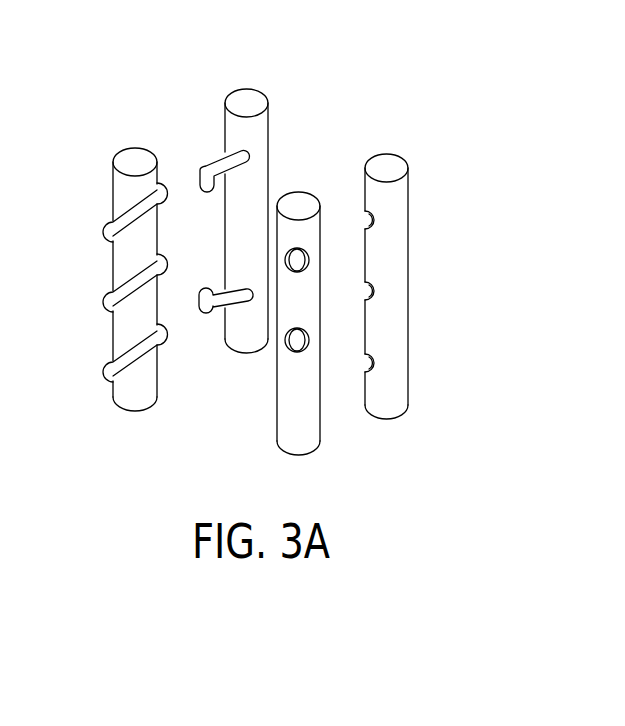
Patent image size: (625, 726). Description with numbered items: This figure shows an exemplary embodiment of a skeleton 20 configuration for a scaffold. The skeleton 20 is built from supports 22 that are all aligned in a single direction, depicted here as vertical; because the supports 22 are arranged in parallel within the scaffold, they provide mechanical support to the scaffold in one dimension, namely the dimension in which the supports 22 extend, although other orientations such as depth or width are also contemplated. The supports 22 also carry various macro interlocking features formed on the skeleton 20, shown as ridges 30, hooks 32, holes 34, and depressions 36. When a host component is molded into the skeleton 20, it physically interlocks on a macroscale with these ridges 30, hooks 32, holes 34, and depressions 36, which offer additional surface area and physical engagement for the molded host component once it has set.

The skeleton 20 is at (379, 96).
The supports 22 is at (112, 275).
The ridges 30 is at (108, 229).
The hooks 32 is at (206, 173).
The holes 34 is at (377, 222).
The depressions 36 is at (298, 268).